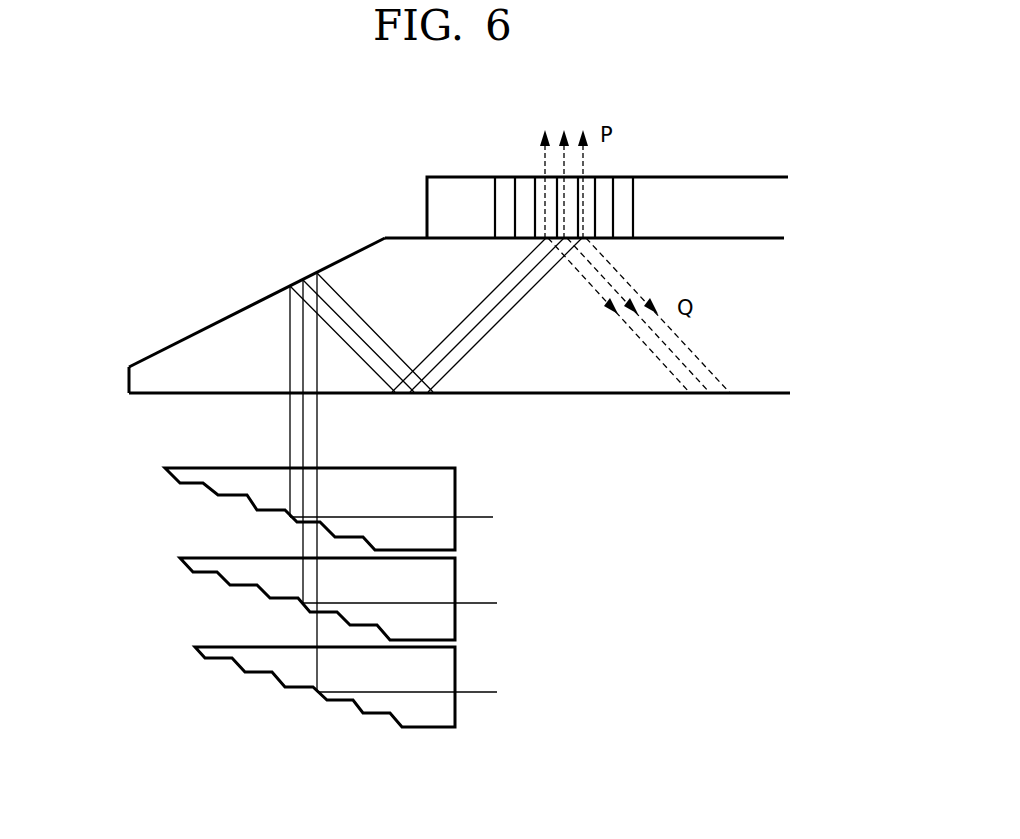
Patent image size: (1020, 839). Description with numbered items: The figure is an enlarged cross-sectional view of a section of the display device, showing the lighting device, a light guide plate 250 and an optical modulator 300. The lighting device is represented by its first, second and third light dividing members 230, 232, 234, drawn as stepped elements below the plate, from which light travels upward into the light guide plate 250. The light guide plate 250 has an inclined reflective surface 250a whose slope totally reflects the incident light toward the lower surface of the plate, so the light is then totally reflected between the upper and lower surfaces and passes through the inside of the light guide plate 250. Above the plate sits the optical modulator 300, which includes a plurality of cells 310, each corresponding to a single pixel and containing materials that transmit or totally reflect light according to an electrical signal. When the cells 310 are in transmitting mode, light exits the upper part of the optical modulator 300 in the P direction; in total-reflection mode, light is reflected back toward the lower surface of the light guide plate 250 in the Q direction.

The optical modulator 300 is at (426, 188).
The cell 310 is at (507, 177).
The light guide plate 250 is at (153, 380).
The reflective surface 250a is at (204, 336).
The third light dividing member 234 is at (172, 475).
The second light dividing member 232 is at (182, 560).
The first light dividing member 230 is at (195, 650).